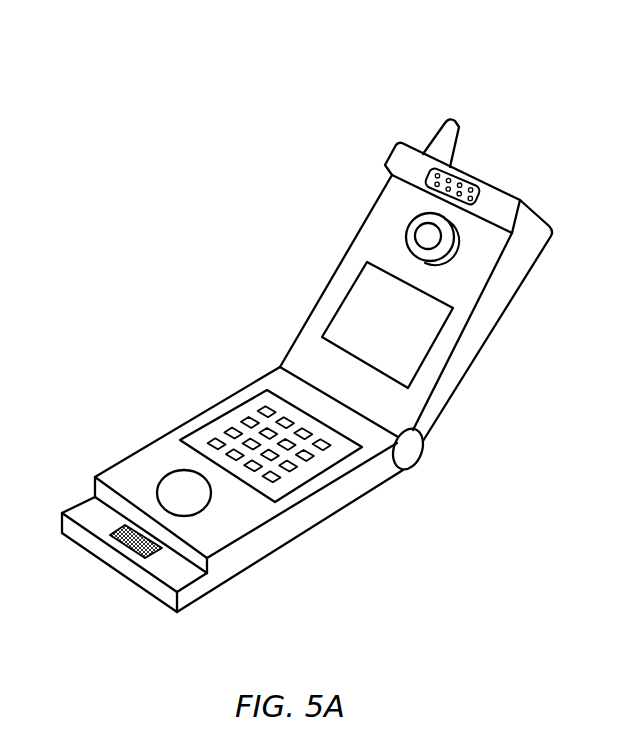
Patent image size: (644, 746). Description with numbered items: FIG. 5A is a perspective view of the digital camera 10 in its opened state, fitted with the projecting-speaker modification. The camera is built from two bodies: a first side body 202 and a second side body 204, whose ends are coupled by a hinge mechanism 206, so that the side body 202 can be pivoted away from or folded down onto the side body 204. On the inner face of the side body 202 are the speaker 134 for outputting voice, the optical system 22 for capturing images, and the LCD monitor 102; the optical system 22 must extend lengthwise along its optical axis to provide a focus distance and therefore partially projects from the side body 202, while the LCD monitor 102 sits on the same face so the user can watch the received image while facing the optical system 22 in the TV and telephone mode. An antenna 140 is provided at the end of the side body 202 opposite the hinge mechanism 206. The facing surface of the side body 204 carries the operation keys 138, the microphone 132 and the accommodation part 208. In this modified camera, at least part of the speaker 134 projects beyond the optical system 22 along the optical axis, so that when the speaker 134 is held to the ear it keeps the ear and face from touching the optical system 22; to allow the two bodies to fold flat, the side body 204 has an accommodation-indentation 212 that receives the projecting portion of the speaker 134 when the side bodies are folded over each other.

The digital camera 10 is at (593, 37).
The optical system 22 is at (414, 231).
The LCD monitor 102 is at (357, 303).
The microphone 132 is at (118, 543).
The speaker 134 is at (508, 213).
The operation keys 138 is at (232, 430).
The antenna 140 is at (447, 128).
The side body 202 is at (488, 318).
The side body 204 is at (308, 511).
The hinge mechanism 206 is at (413, 450).
The accommodation part 208 is at (187, 503).
The accommodation-indentation 212 is at (83, 507).